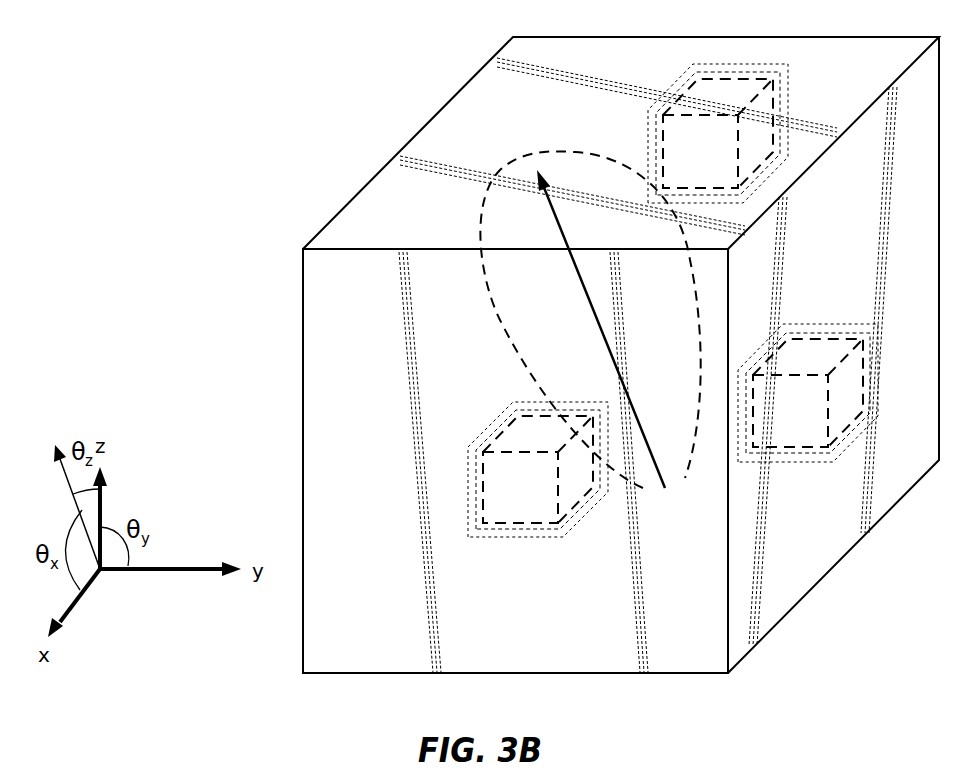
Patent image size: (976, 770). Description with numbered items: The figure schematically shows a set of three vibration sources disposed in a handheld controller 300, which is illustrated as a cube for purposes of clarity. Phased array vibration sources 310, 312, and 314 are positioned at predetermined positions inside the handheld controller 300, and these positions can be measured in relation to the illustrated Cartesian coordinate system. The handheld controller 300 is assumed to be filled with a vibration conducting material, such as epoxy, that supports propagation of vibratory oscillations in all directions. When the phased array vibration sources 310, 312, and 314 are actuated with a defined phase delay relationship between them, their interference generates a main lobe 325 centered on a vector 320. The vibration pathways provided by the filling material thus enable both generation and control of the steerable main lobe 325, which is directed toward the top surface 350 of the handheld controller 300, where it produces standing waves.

The handheld controller 300 is at (288, 92).
The top surface 350 is at (538, 137).
The phased array vibration source 312 is at (781, 72).
The phased array vibration source 310 is at (510, 531).
The phased array vibration source 314 is at (847, 433).
The main lobe 325 is at (490, 313).
The vector 320 is at (593, 303).